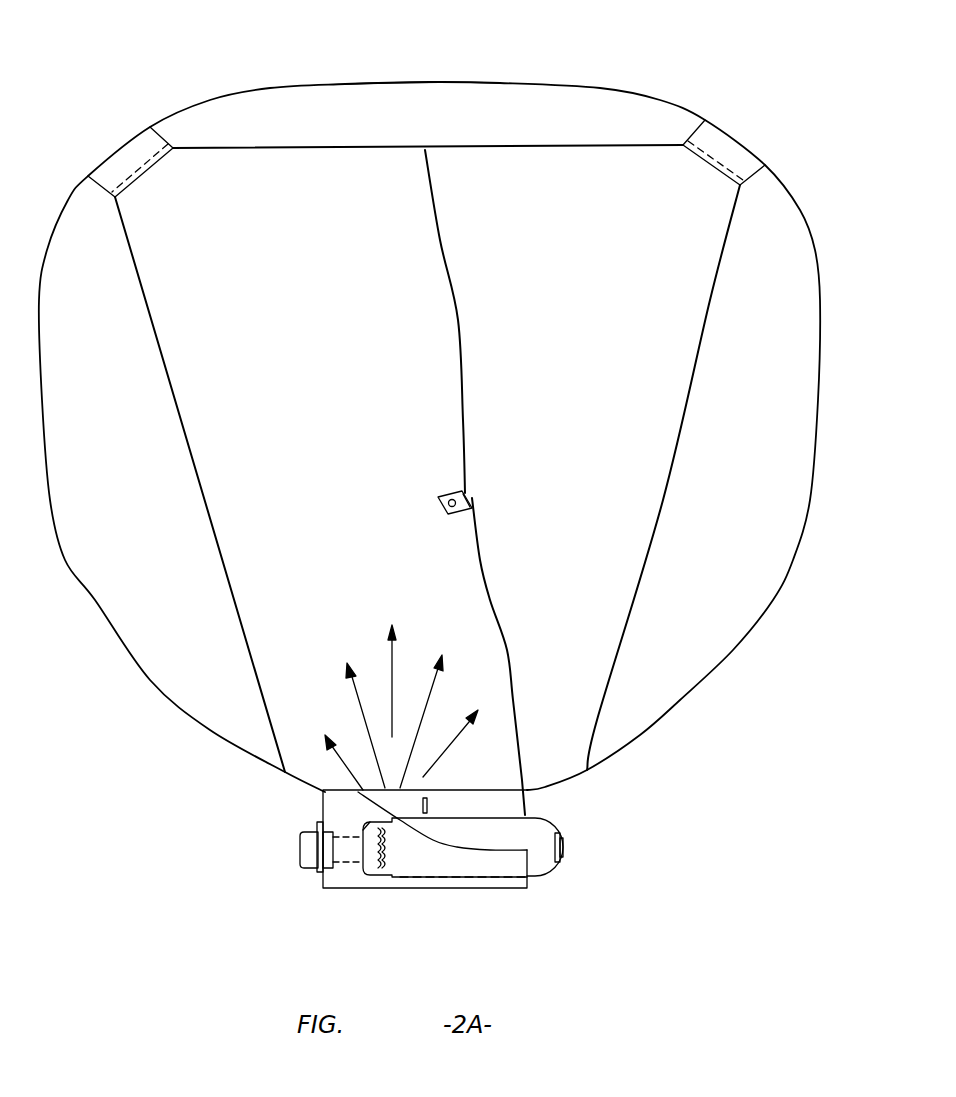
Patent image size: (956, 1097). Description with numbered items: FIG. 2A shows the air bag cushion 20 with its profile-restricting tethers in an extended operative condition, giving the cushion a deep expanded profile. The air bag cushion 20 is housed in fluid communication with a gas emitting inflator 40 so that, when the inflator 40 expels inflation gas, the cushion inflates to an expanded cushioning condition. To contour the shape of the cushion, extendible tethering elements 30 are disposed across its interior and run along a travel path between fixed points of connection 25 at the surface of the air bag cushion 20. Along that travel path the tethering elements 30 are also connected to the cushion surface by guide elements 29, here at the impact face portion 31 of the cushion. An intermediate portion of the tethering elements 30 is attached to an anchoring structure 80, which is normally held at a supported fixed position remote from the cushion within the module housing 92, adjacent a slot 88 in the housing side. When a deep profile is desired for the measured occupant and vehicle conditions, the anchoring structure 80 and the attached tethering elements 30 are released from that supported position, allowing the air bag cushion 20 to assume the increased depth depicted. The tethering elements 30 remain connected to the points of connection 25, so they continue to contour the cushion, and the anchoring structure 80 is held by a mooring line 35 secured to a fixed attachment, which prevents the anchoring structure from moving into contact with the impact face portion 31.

The air bag cushion 20 is at (723, 86).
The fixed points of connection 25 is at (280, 775).
The guide elements 29 is at (163, 138).
The tethering elements 30 is at (285, 148).
The impact face portion 31 is at (467, 83).
The mooring line 35 is at (488, 560).
The gas emitting inflator 40 is at (547, 868).
The anchoring structure 80 is at (444, 507).
The slot 88 is at (430, 803).
The module housing 92 is at (485, 888).